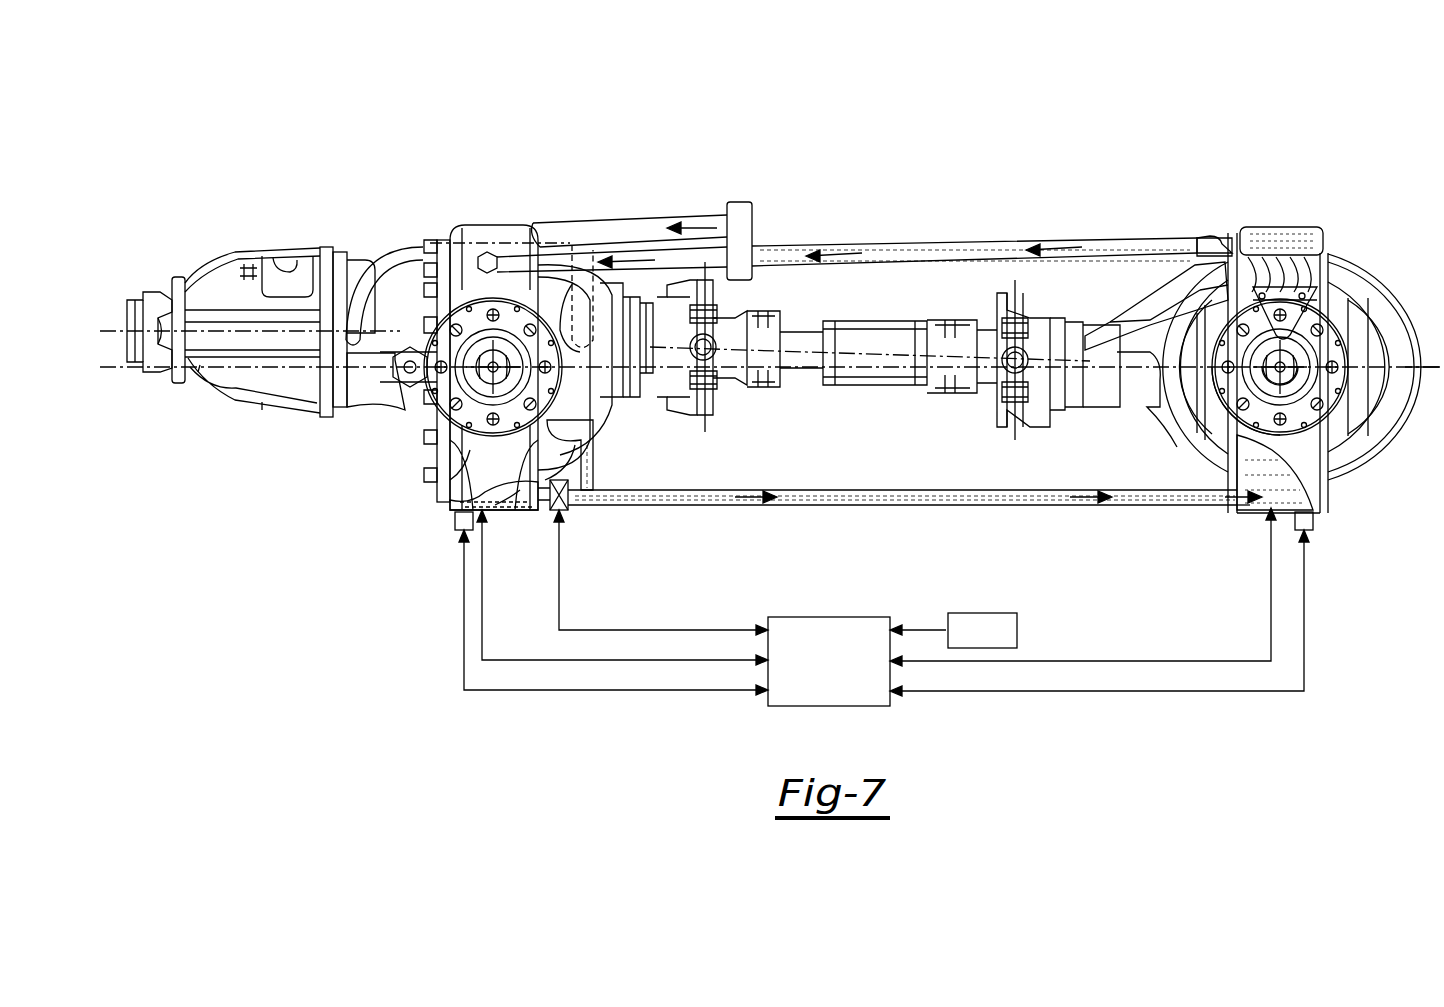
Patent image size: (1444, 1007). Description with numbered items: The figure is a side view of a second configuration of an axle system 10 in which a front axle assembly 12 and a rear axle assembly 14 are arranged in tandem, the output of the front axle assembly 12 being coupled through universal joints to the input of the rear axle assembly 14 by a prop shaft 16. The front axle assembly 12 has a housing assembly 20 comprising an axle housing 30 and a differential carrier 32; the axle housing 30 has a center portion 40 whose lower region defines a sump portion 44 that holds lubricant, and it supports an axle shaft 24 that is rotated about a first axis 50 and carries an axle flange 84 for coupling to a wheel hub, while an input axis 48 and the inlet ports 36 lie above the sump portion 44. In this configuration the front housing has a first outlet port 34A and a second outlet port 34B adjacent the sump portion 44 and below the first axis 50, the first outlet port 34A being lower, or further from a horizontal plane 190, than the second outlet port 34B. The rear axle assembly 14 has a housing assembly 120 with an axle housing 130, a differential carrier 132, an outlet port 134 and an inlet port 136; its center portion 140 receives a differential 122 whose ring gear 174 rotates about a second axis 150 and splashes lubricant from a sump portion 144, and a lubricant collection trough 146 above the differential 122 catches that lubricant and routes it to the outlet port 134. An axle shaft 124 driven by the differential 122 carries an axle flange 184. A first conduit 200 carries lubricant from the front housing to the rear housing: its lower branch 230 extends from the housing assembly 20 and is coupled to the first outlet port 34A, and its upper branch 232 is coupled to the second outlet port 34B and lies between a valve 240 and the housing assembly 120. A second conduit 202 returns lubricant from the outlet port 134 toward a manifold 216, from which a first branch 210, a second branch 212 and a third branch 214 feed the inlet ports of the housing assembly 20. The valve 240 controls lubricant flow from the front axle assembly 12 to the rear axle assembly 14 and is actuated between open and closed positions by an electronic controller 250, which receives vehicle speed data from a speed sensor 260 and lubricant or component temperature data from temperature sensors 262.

The axle system 10 is at (1010, 166).
The front axle assembly 12 is at (283, 250).
The rear axle assembly 14 is at (1320, 243).
The prop shaft 16 is at (887, 353).
The housing assembly 20 is at (333, 248).
The axle shaft 24 is at (490, 368).
The axle housing 30 is at (468, 228).
The differential carrier 32 is at (362, 413).
The first outlet port 34A is at (512, 512).
The second outlet port 34B is at (600, 408).
The inlet port 36 is at (490, 253).
The center portion 40 is at (447, 507).
The sump portion 44 is at (505, 512).
The input axis 48 is at (114, 328).
The first axis 50 is at (493, 372).
The axle flange 84 is at (425, 340).
The housing assembly 120 is at (1245, 237).
The differential 122 is at (1318, 380).
The axle shaft 124 is at (1290, 365).
The axle housing 130 is at (1352, 280).
The differential carrier 132 is at (1133, 300).
The outlet port 134 is at (1208, 245).
The inlet port 136 is at (1240, 507).
The center portion 140 is at (1325, 497).
The sump portion 144 is at (1245, 495).
The lubricant collection trough 146 is at (1265, 245).
The second axis 150 is at (1278, 380).
The ring gear 174 is at (1312, 257).
The axle flange 184 is at (1215, 382).
The horizontal plane 190 is at (1418, 368).
The first conduit 200 is at (935, 487).
The second conduit 202 is at (935, 247).
The first branch 210 is at (405, 245).
The second branch 212 is at (580, 275).
The third branch 214 is at (633, 258).
The manifold 216 is at (727, 205).
The lower branch 230 is at (535, 497).
The upper branch 232 is at (593, 470).
The valve 240 is at (569, 505).
The electronic controller 250 is at (812, 674).
The speed sensor 260 is at (970, 644).
The temperature sensor 262 is at (455, 522).